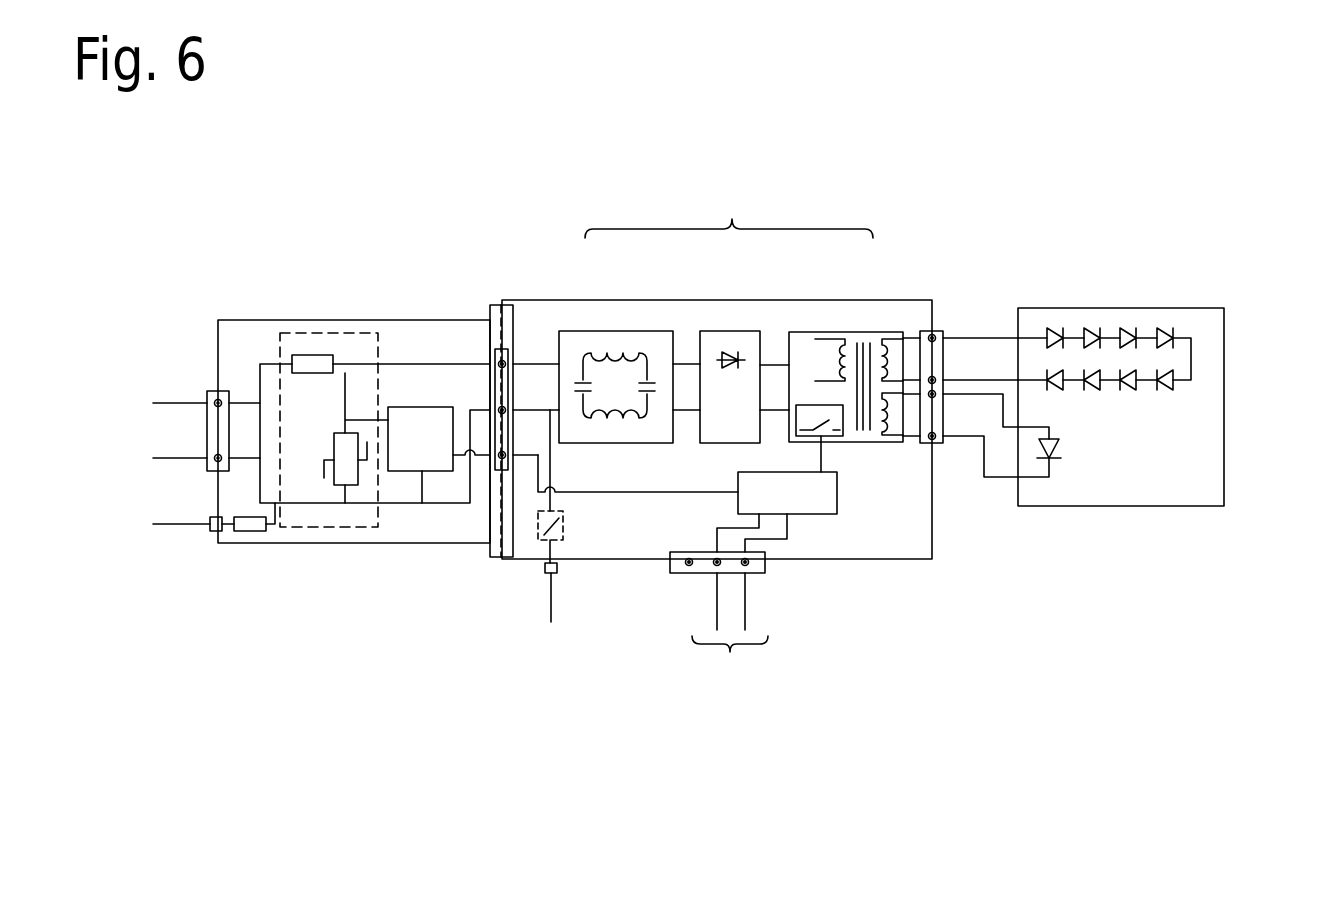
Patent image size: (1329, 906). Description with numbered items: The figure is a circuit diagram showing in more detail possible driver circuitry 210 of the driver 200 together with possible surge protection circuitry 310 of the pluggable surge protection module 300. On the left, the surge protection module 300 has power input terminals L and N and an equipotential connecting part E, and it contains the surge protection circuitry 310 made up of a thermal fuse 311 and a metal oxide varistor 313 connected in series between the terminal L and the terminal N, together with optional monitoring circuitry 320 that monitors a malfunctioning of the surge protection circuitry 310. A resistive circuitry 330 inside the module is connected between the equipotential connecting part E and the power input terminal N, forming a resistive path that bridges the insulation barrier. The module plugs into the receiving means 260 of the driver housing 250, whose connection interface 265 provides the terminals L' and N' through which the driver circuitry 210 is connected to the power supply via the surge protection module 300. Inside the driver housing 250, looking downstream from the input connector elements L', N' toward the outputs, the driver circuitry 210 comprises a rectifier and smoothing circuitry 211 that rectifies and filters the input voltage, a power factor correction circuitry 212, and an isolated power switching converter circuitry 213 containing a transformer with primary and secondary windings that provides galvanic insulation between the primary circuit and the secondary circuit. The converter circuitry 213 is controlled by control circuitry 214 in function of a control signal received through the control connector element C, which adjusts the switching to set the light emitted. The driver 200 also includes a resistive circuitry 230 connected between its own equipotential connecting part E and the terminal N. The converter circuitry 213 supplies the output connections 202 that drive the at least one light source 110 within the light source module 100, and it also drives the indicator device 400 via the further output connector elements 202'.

The LED lighting module 100 is at (1122, 308).
The light source 110 is at (1180, 333).
The driver 200 is at (932, 300).
The output connections 202 is at (960, 387).
The output connector elements 202' is at (996, 435).
The driver circuitry 210 is at (729, 213).
The rectifier and smoothing circuitry 211 is at (605, 331).
The power factor correction circuitry 212 is at (725, 331).
The isolated power switching converter circuitry 213 is at (838, 332).
The control circuitry 214 is at (812, 514).
The resistive circuitry 230 is at (563, 530).
The driver housing 250 is at (840, 560).
The receiving means 260 is at (495, 305).
The connection interface 265 is at (507, 472).
The surge protection module 300 is at (218, 320).
The surge protection circuitry 310 is at (360, 333).
The thermal fuse 311 is at (300, 355).
The metal oxide varistor 313 is at (334, 448).
The monitoring circuitry 320 is at (410, 407).
The resistive circuitry 330 is at (245, 531).
The indicator device 400 is at (1063, 446).